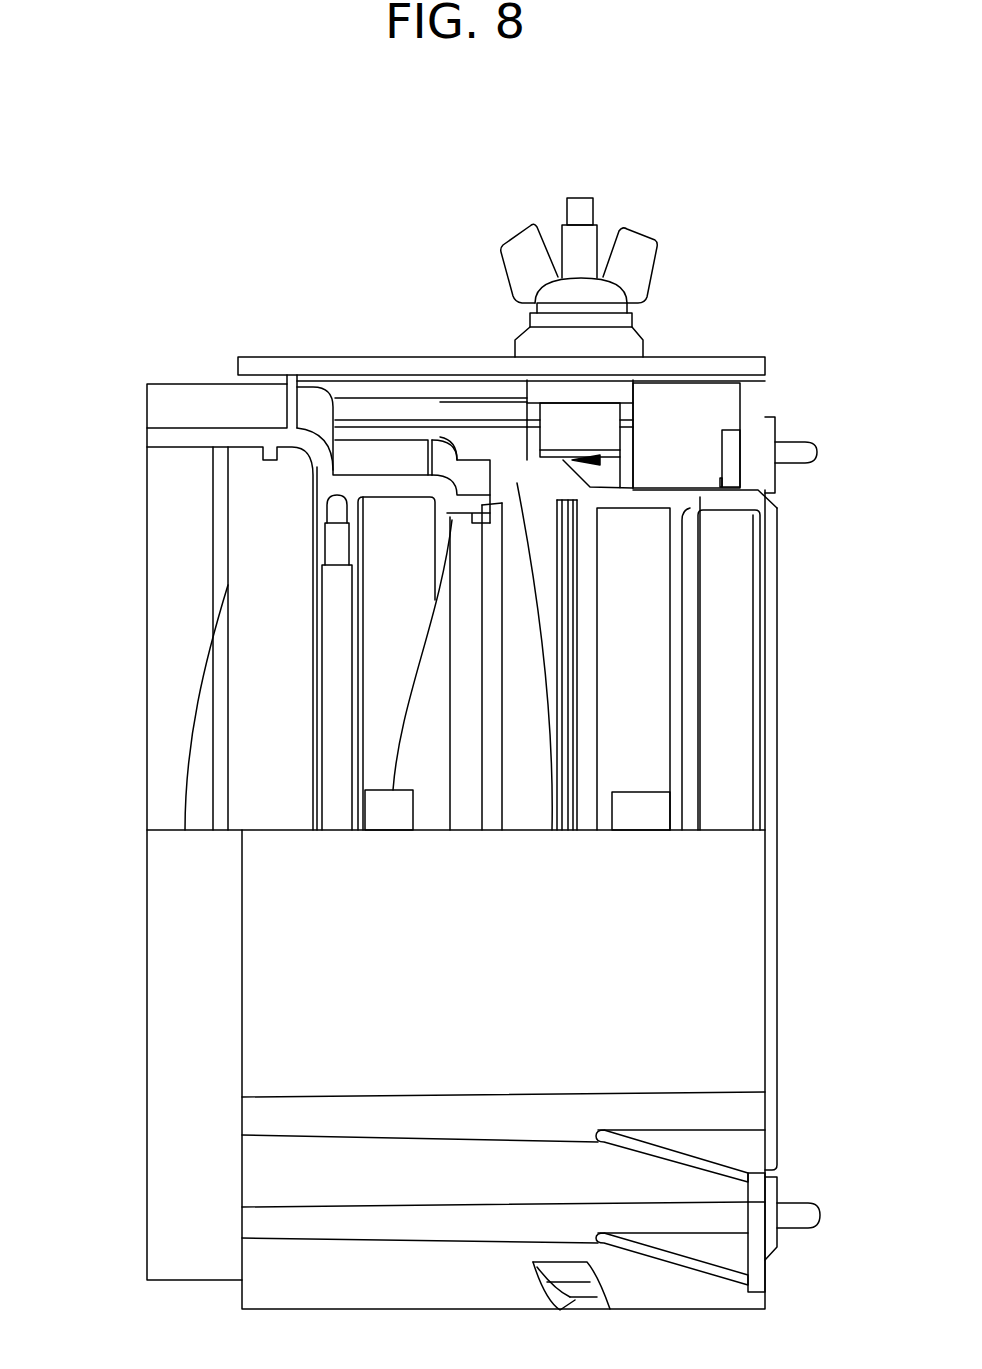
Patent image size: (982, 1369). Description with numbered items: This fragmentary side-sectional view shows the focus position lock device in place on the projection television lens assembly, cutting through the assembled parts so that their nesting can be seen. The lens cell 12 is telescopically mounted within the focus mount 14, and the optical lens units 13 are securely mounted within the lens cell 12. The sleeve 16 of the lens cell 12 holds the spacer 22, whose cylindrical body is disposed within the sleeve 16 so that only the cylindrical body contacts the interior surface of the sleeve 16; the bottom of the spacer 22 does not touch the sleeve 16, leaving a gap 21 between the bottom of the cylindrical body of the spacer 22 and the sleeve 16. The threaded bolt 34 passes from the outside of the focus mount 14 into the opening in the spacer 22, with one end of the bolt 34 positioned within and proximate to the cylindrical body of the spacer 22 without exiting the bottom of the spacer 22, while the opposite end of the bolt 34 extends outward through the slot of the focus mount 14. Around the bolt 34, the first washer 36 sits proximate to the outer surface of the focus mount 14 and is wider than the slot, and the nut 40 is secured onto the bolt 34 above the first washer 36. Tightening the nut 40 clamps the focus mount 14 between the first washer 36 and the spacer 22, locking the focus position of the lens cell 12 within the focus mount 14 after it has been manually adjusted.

The lens cell 12 is at (168, 407).
The optical lens units 13 is at (442, 727).
The focus mount 14 is at (317, 357).
The sleeve 16 is at (630, 442).
The gap 21 is at (600, 462).
The spacer 22 is at (593, 420).
The threaded bolt 34 is at (578, 197).
The first washer 36 is at (530, 350).
The nut 40 is at (523, 245).